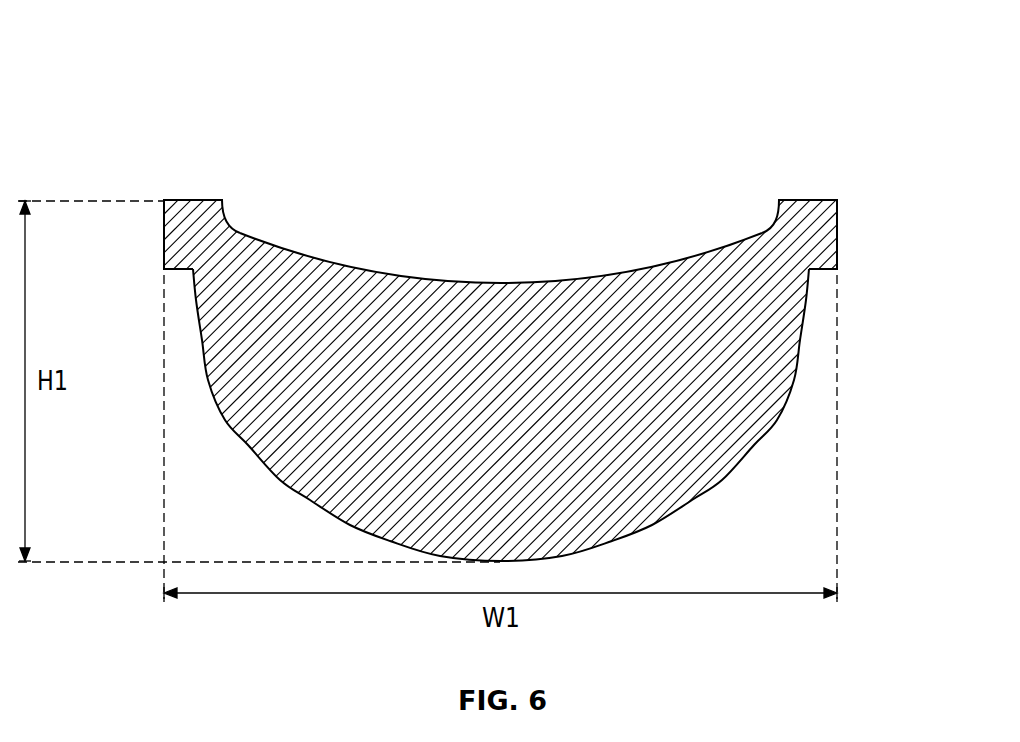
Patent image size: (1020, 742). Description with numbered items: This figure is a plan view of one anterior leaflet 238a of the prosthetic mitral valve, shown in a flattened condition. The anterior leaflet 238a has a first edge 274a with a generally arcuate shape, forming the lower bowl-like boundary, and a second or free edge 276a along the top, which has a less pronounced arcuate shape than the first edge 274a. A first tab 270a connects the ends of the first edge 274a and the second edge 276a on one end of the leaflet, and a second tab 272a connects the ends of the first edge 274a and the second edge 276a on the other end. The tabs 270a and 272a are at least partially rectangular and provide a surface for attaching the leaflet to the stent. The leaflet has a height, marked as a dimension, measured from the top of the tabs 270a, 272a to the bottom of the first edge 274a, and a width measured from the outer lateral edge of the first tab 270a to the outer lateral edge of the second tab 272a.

The anterior leaflet 238a is at (167, 70).
The first tab 270a is at (172, 245).
The second tab 272a is at (828, 242).
The first edge 274a is at (697, 495).
The second or free edge 276a is at (587, 278).